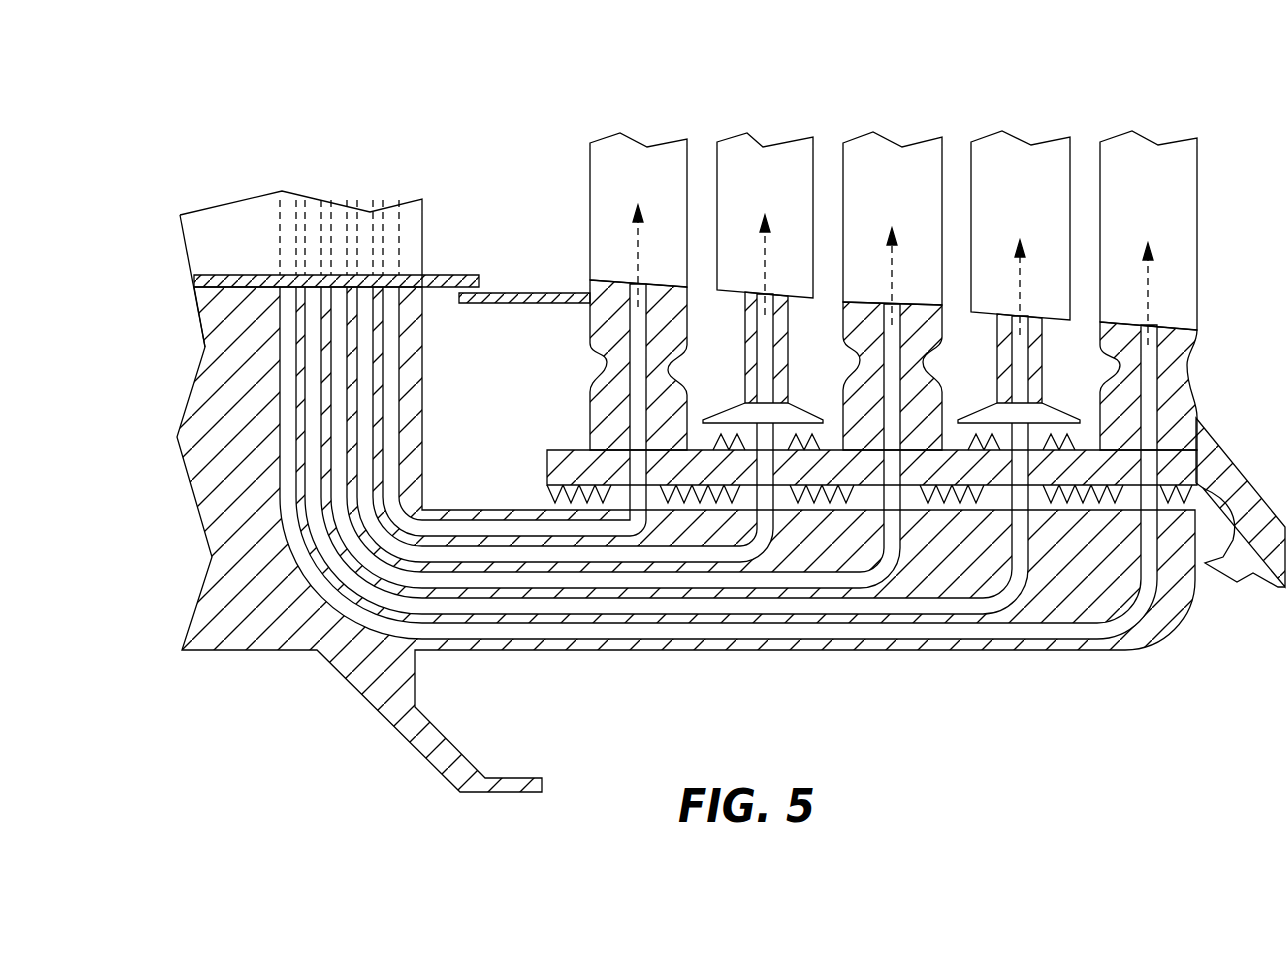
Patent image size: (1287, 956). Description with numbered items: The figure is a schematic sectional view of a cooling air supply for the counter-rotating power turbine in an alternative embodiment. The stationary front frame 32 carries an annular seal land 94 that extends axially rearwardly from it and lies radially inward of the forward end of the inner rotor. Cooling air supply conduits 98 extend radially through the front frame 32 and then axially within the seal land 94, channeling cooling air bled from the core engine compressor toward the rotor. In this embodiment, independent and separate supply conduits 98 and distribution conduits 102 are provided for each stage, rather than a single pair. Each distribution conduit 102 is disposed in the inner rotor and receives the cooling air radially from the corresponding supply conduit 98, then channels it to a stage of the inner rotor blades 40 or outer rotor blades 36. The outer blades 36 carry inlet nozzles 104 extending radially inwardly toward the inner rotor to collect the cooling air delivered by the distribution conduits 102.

The front frame 32 is at (200, 515).
The outer rotor blades 36 is at (762, 155).
The inner rotor blades 40 is at (630, 155).
The seal land 94 is at (492, 652).
The cooling air supply conduit 98 is at (607, 530).
The distribution conduit 102 is at (590, 393).
The inlet nozzles 104 is at (745, 380).